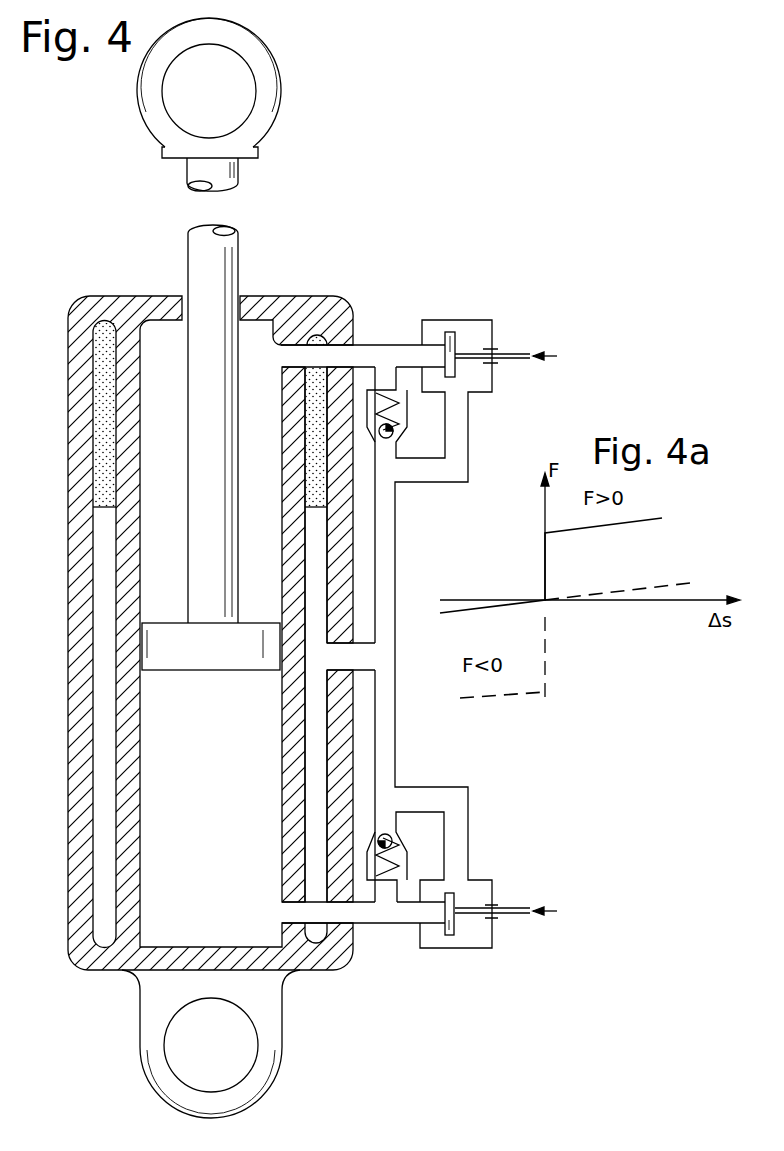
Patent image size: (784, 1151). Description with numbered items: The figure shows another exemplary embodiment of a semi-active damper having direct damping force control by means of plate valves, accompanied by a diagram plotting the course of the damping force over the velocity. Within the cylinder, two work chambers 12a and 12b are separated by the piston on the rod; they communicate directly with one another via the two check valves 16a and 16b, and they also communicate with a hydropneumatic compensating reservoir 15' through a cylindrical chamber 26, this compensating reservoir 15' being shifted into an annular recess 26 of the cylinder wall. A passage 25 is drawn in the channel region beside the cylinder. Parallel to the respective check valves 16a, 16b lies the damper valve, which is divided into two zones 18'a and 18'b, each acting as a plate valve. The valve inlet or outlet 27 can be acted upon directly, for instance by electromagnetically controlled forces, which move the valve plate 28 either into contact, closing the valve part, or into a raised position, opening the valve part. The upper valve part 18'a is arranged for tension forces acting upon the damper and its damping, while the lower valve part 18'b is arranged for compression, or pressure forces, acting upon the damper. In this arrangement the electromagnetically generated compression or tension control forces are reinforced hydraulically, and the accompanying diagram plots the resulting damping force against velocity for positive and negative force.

The work chamber 12a is at (155, 342).
The work chamber 12b is at (160, 793).
The hydropneumatic compensating reservoir 15' is at (176, 415).
The cylindrical chamber 26 is at (97, 567).
The bypass passage 25 is at (353, 657).
The valve inlet or outlet 27 is at (410, 357).
The valve plate 28 is at (450, 333).
The upper valve part 18'a is at (497, 443).
The lower valve part 18'b is at (520, 826).
The check valve 16a is at (398, 417).
The check valve 16b is at (400, 862).